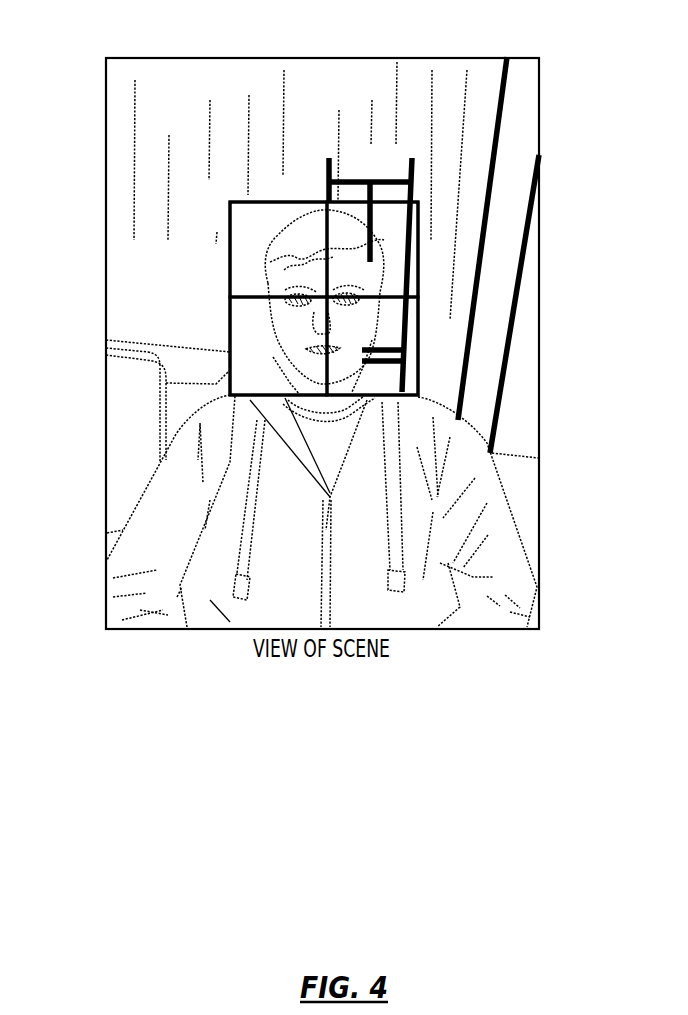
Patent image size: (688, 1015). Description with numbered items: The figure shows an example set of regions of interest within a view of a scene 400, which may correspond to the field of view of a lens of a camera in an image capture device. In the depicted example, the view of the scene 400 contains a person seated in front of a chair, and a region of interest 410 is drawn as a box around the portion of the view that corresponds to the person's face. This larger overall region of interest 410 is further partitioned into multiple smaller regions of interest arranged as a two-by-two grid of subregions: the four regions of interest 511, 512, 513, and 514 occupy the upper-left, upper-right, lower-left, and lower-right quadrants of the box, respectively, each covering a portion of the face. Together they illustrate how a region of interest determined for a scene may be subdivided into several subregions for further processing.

The view of a scene 400 is at (176, 58).
The region of interest 410 is at (420, 223).
The region of interest 511 is at (258, 262).
The region of interest 512 is at (388, 288).
The region of interest 513 is at (242, 347).
The region of interest 514 is at (390, 373).